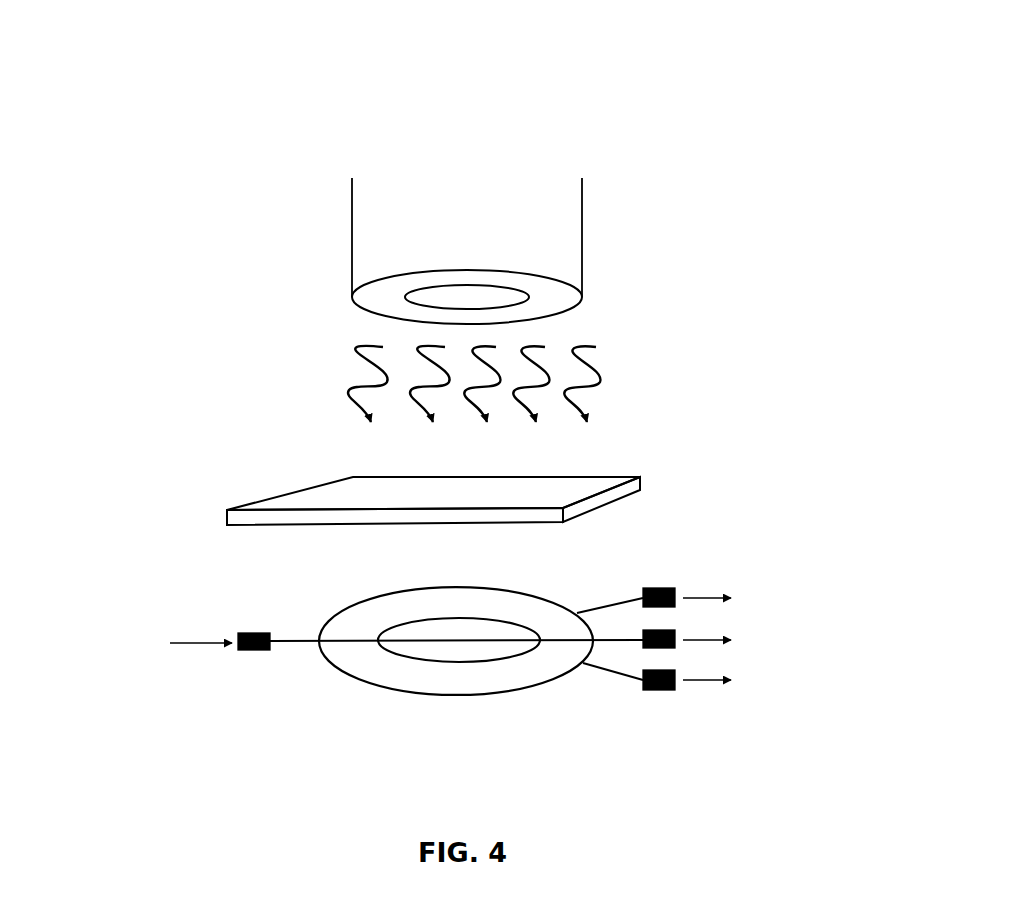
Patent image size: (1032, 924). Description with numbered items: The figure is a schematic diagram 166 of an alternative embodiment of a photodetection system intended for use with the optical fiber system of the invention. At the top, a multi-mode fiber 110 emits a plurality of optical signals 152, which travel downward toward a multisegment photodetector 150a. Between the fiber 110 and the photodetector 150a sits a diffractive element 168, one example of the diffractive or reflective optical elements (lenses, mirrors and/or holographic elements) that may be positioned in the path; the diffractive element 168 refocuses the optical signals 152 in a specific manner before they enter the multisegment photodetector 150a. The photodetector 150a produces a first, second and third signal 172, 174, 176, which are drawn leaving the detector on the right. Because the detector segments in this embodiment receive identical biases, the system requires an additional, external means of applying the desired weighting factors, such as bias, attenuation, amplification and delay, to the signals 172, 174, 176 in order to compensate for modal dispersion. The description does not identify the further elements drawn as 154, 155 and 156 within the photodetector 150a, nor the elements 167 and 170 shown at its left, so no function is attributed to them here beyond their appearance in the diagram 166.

The multi-mode fiber 110 is at (352, 227).
The schematic diagram 166 is at (386, 160).
The optical signals 152 is at (344, 372).
The diffractive element 168 is at (287, 497).
The multisegment photodetector 150a is at (355, 573).
The outer photodetector segment (upper) 154 is at (415, 590).
The outer photodetector segment (lower) 155 is at (382, 686).
The inner photodetector segment 156 is at (512, 661).
The DC bias terminal 167 is at (255, 633).
The DC bias source 170 is at (113, 648).
The signal V1 172 is at (787, 598).
The signal V2 174 is at (787, 637).
The signal V3 176 is at (787, 674).